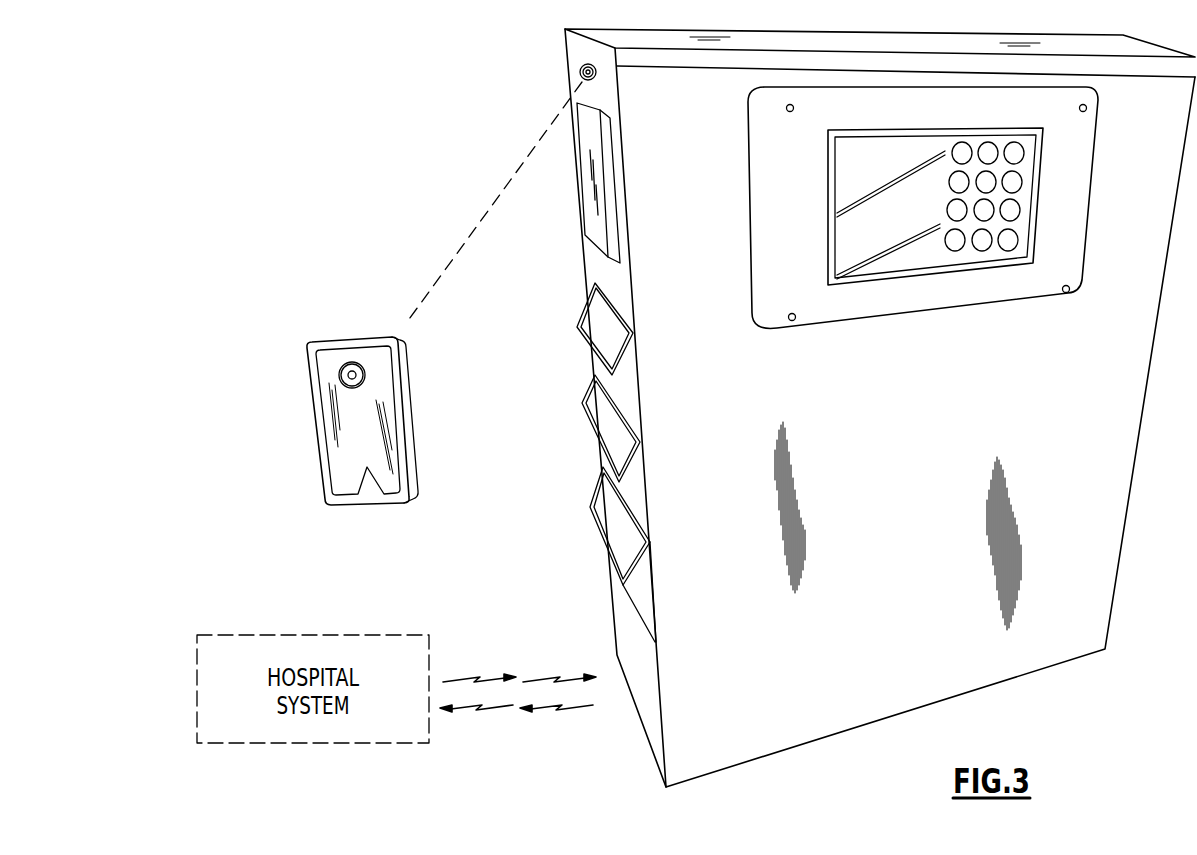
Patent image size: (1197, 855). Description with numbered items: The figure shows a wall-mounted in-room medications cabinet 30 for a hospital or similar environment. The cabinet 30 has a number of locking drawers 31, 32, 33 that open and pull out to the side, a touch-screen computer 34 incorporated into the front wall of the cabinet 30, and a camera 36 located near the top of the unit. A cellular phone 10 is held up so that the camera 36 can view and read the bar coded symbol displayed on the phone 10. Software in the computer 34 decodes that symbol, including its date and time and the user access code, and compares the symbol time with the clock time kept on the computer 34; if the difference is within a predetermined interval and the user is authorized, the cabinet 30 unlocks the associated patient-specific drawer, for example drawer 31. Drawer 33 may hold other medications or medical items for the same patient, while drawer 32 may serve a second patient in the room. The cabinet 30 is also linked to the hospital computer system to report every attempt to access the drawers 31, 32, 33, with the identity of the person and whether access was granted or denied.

The cellular phone 10 is at (365, 503).
The wall-mounted medications cabinet 30 is at (853, 408).
The locking drawer 31 is at (583, 342).
The locking drawer 32 is at (590, 418).
The locking drawer 33 is at (595, 527).
The touch-screen computer 34 is at (765, 162).
The camera 36 is at (580, 69).